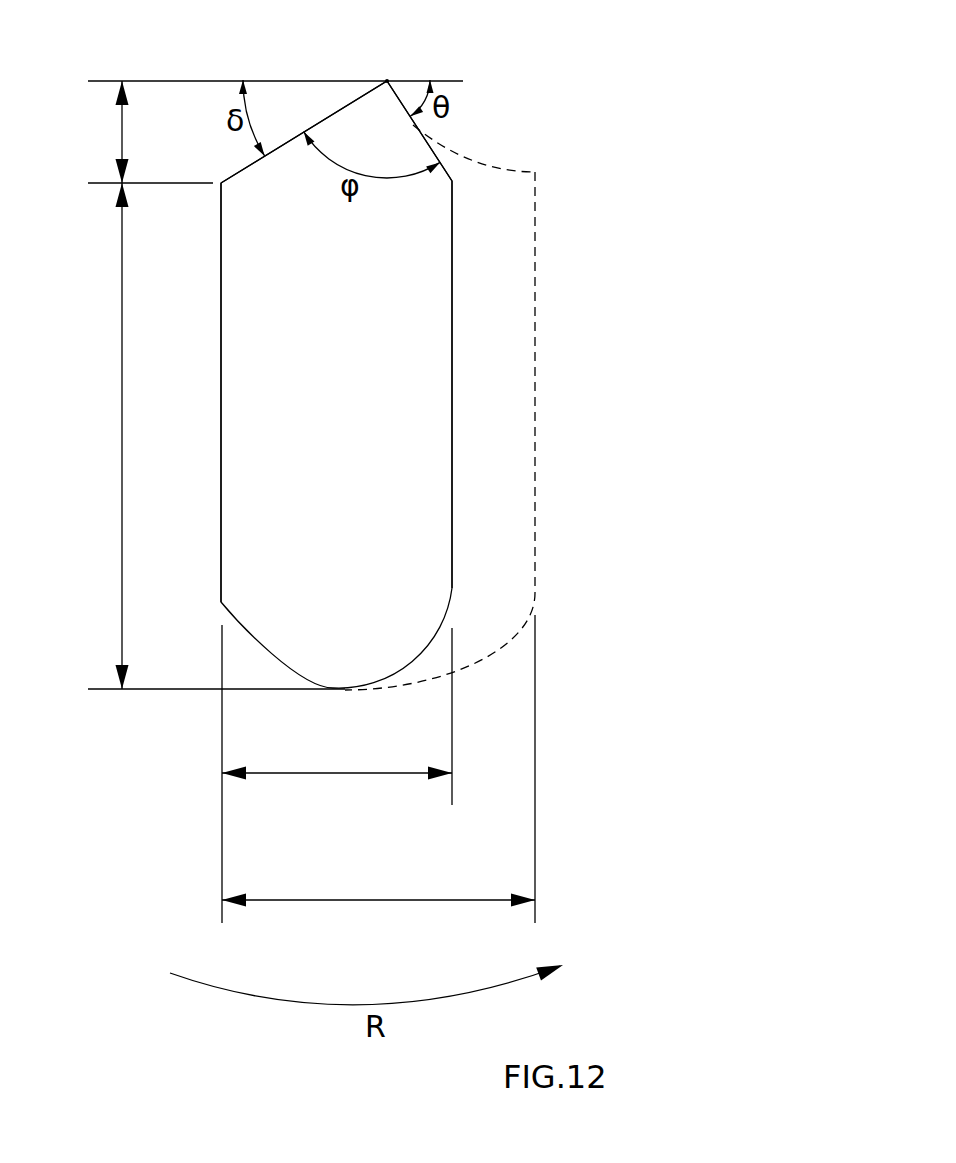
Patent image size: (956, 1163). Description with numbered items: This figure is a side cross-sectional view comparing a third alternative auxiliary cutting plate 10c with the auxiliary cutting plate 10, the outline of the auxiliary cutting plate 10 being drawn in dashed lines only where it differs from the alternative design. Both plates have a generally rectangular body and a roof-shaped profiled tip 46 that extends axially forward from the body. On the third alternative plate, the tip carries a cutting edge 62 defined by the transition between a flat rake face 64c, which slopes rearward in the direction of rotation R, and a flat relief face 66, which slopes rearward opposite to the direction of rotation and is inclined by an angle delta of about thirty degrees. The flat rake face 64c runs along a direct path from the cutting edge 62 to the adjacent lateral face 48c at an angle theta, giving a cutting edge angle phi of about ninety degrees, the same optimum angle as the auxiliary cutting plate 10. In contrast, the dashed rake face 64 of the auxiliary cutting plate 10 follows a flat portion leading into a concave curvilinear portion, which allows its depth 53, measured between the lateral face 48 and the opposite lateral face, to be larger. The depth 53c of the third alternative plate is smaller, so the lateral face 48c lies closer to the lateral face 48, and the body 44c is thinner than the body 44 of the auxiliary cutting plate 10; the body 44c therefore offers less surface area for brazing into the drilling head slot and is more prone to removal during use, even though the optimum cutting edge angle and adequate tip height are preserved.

The auxiliary cutting plate 10 is at (503, 560).
The third alternative auxiliary cutting plate 10c is at (405, 480).
The body 44 is at (101, 436).
The body 44c is at (464, 384).
The profiled tip 46 is at (99, 132).
The lateral face 48 is at (222, 475).
The lateral face 48c is at (452, 383).
The depth 53 is at (378, 782).
The depth 53c is at (337, 774).
The cutting edge 62 is at (383, 88).
The rake face 64 is at (538, 170).
The flat rake face 64c is at (443, 175).
The relief face 66 is at (343, 107).